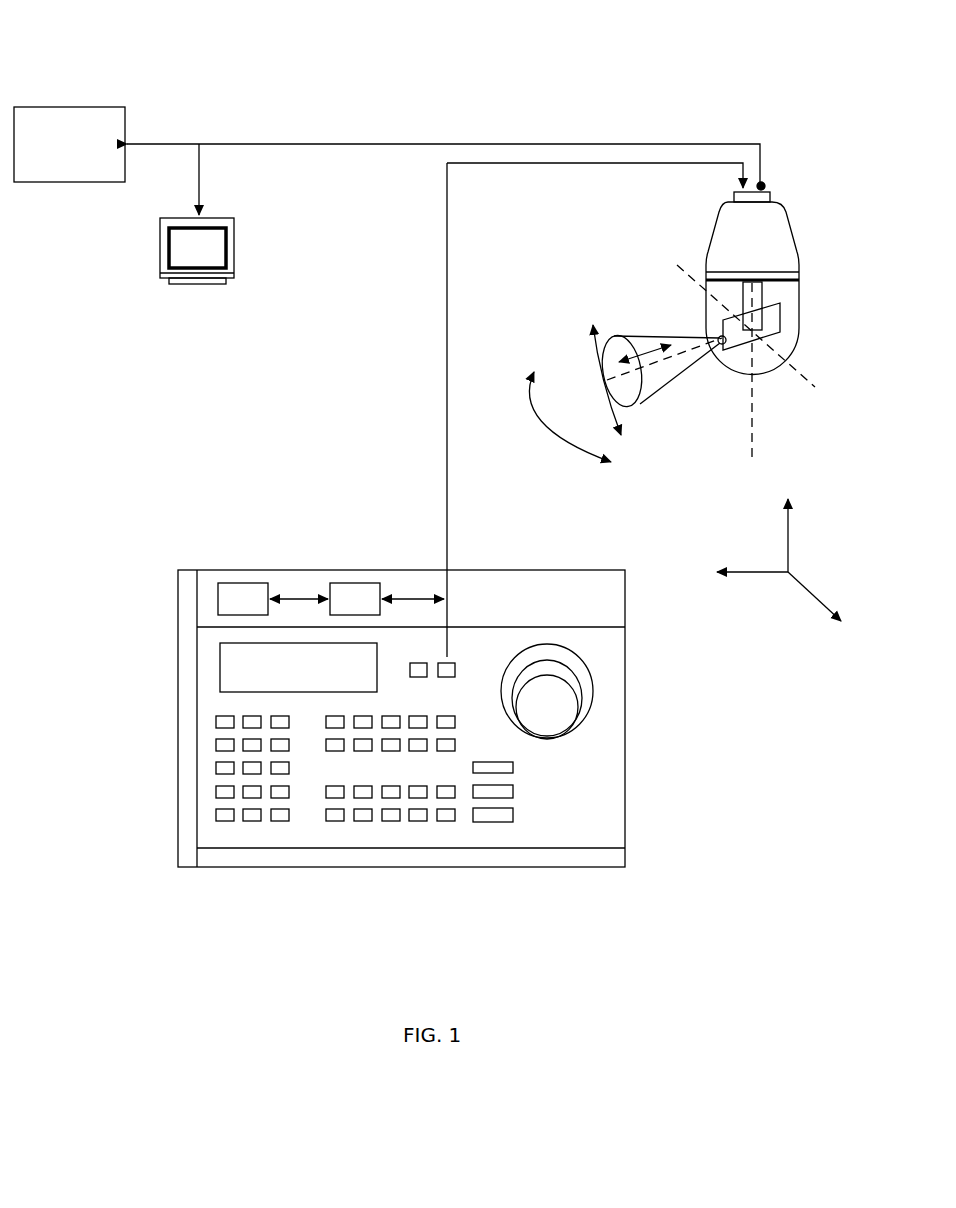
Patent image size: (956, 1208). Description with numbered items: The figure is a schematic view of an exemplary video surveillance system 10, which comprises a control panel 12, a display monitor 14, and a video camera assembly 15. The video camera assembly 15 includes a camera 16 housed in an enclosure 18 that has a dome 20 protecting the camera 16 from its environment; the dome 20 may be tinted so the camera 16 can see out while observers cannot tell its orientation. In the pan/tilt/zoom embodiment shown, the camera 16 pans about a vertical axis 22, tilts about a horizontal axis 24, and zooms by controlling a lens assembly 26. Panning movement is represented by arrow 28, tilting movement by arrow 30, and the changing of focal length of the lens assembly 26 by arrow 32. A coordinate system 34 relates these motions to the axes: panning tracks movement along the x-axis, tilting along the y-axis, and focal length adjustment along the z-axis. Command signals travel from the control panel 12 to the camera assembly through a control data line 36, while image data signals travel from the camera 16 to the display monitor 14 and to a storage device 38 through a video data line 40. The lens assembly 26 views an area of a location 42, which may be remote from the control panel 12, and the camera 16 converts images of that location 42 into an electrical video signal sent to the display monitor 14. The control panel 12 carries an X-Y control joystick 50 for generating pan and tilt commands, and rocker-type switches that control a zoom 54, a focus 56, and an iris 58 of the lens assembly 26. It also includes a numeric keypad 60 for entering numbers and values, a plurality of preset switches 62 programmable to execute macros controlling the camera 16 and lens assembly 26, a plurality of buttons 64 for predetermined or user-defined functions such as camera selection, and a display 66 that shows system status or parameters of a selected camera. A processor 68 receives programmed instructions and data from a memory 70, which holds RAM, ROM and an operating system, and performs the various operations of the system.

The video surveillance system 10 is at (383, 58).
The control panel 12 is at (625, 737).
The display monitor 14 is at (160, 250).
The video camera assembly 15 is at (803, 179).
The camera 16 is at (775, 318).
The enclosure 18 is at (778, 237).
The dome 20 is at (765, 378).
The vertical axis 22 is at (748, 432).
The horizontal axis 24 is at (800, 378).
The lens assembly 26 is at (720, 340).
The arrow 28 is at (527, 372).
The arrow 30 is at (590, 345).
The arrow 32 is at (612, 340).
The coordinate system 34 is at (790, 543).
The control data line 36 is at (567, 163).
The storage device 38 is at (70, 107).
The video data line 40 is at (493, 145).
The location 42 is at (474, 410).
The X-Y control joystick 50 is at (553, 712).
The zoom 54 is at (490, 822).
The focus 56 is at (473, 790).
The iris 58 is at (484, 762).
The numeric keypad 60 is at (168, 710).
The preset switches 62 is at (457, 716).
The buttons 64 is at (455, 783).
The display 66 is at (218, 598).
The processor 68 is at (362, 583).
The memory 70 is at (258, 583).